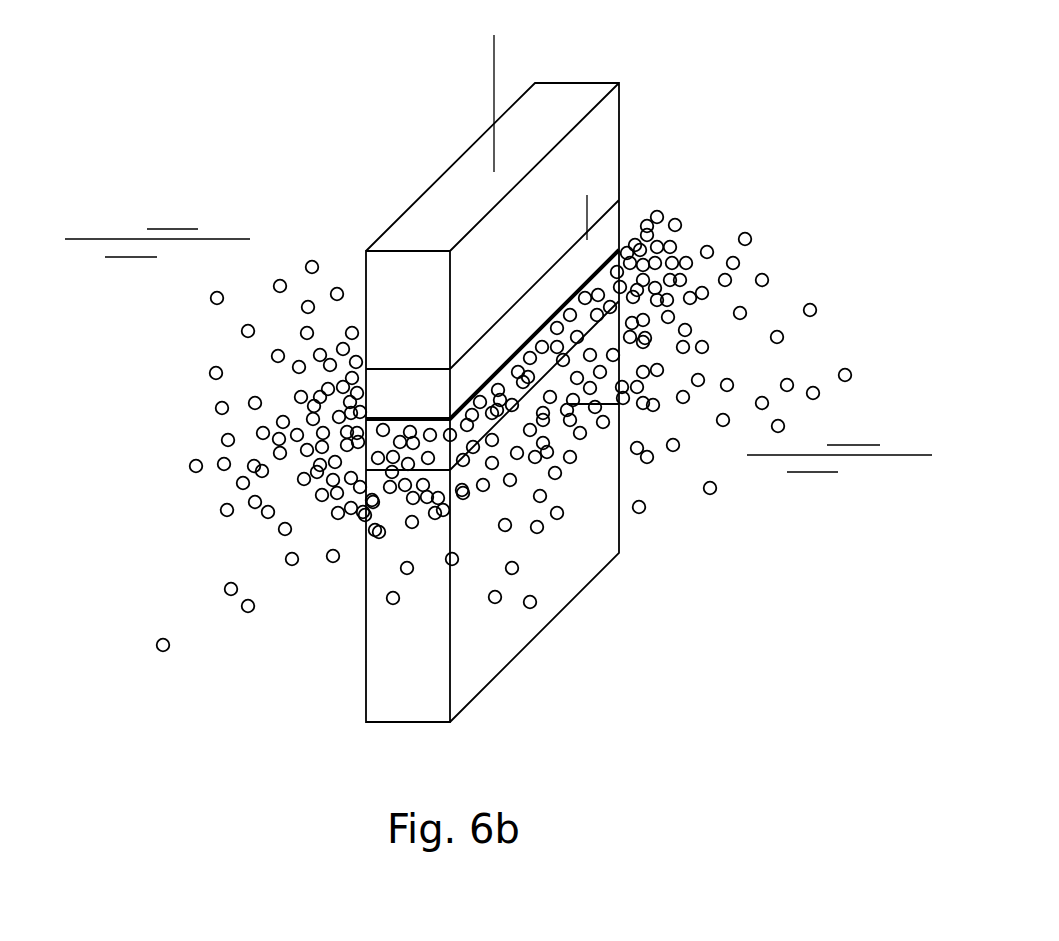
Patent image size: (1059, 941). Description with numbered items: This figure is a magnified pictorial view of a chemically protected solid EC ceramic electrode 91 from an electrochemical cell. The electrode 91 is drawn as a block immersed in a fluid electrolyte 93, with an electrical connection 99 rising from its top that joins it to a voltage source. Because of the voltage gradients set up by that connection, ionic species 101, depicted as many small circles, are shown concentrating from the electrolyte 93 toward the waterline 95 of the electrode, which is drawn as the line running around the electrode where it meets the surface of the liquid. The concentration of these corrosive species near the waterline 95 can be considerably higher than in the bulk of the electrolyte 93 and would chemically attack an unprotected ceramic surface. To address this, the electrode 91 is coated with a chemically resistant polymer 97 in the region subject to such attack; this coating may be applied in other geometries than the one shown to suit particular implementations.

The electrode 91 is at (619, 110).
The electrolyte 93 is at (802, 293).
The waterline 95 is at (497, 370).
The chemically resistant polymer 97 is at (600, 268).
The electrical connection 99 is at (492, 85).
The ionic species 101 is at (212, 371).